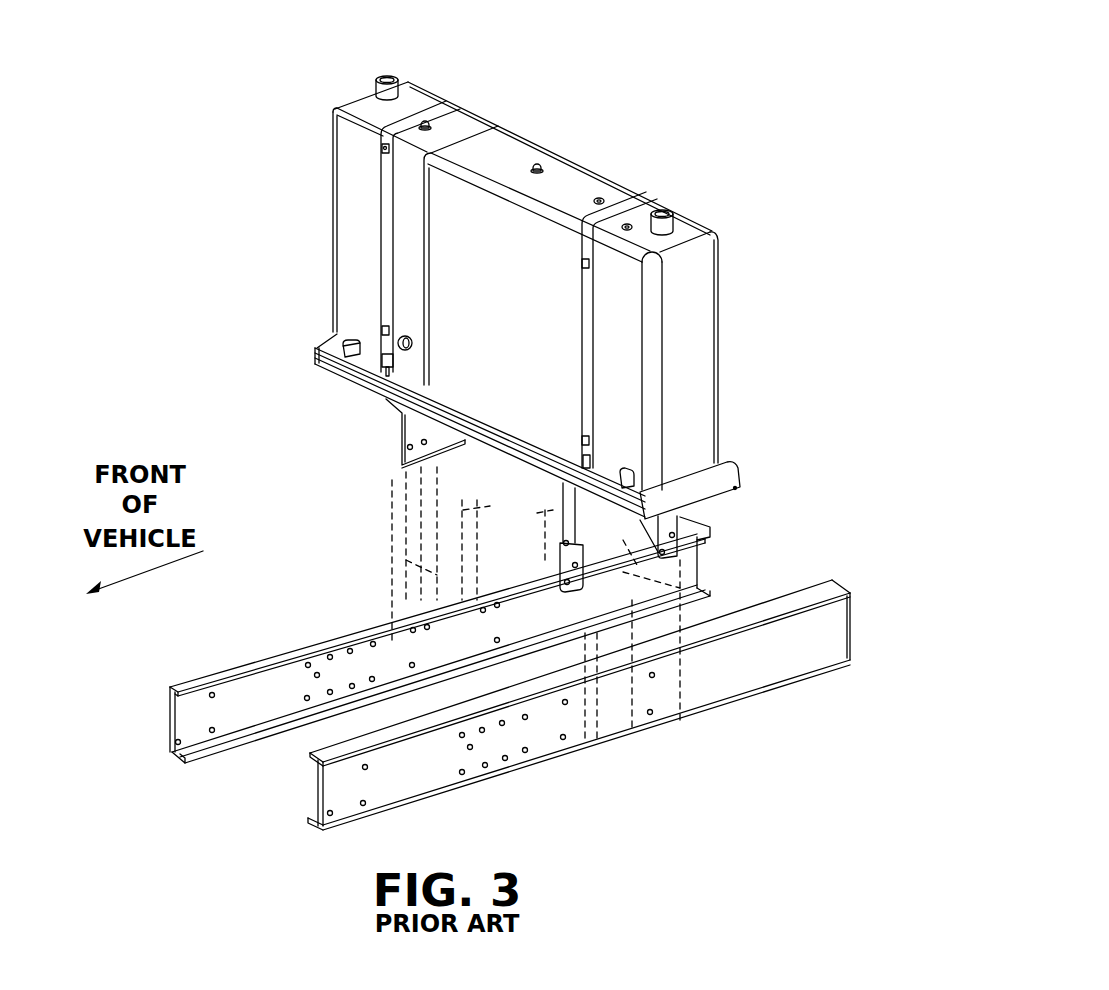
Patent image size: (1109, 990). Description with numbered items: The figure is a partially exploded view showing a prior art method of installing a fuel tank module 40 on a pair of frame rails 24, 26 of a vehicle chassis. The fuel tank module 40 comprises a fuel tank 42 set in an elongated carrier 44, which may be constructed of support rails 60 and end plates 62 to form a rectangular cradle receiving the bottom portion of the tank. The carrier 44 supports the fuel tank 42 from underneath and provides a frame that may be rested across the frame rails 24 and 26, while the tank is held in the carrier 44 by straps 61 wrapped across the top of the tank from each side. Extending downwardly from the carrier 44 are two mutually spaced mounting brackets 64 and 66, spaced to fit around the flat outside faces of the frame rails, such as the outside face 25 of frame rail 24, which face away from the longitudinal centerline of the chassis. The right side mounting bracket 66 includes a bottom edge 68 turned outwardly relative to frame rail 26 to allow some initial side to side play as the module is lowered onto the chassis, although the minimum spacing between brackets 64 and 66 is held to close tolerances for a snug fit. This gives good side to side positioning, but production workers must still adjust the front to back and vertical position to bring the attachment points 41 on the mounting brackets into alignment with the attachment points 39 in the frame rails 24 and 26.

The frame rail 24 is at (850, 663).
The outside face 25 is at (830, 625).
The frame rail 26 is at (170, 746).
The attachment points 39 is at (483, 610).
The fuel tank module 40 is at (810, 229).
The attachment points 41 is at (407, 447).
The fuel tank 42 is at (721, 370).
The elongated carrier 44 is at (316, 354).
The support rails 60 is at (343, 376).
The straps 61 is at (457, 102).
The end plates 62 is at (742, 490).
The mounting bracket 64 is at (682, 547).
The right side mounting bracket 66 is at (400, 462).
The bottom edge 68 is at (393, 528).